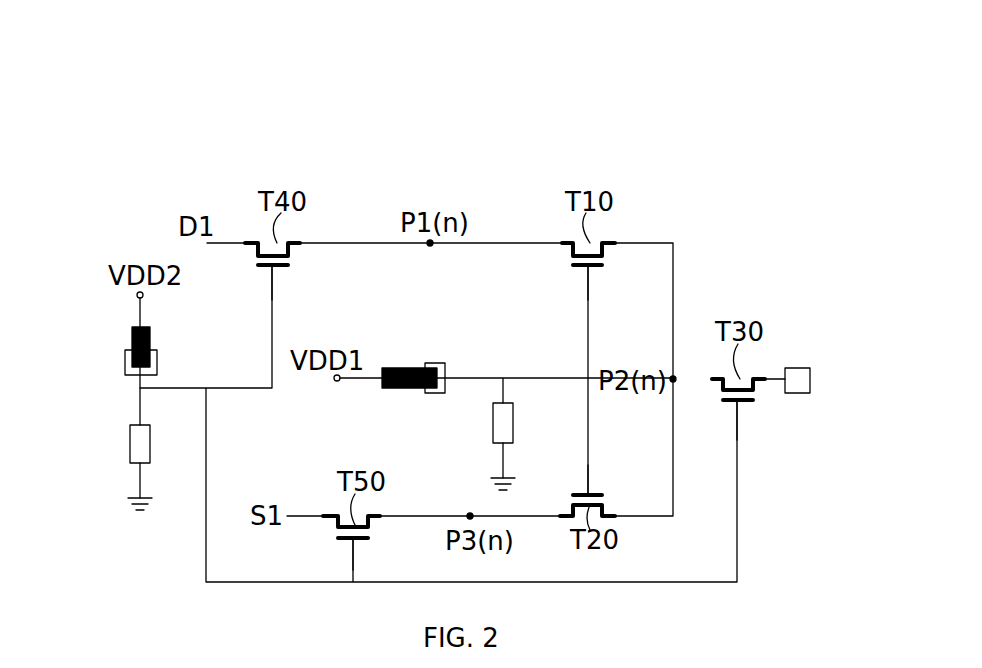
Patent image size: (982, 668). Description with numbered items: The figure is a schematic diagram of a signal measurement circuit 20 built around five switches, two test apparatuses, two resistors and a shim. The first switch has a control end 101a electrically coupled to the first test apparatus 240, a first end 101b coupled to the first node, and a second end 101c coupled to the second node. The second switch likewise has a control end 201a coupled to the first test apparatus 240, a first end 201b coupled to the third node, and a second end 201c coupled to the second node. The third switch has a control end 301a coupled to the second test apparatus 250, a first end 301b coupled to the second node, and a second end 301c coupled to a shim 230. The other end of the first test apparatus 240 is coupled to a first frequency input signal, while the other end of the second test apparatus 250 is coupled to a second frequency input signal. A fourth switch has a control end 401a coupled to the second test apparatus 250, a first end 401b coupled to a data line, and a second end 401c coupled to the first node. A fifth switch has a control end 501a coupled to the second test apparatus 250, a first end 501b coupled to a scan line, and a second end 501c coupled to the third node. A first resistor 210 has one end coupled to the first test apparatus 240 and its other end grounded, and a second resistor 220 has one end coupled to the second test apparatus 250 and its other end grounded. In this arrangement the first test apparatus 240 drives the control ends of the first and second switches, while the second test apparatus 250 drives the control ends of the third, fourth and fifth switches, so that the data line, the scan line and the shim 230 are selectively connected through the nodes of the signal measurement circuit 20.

The signal measurement circuit 20 is at (628, 95).
The second test apparatus 250 is at (126, 347).
The second resistor 220 is at (128, 450).
The first test apparatus 240 is at (408, 368).
The first resistor 210 is at (493, 426).
The shim 230 is at (811, 380).
The control end of the fourth switch 401a is at (288, 268).
The first end of the fourth switch 401b is at (238, 243).
The second end of the fourth switch 401c is at (312, 243).
The control end of the first switch 101a is at (584, 268).
The first end of the first switch 101b is at (555, 243).
The second end of the first switch 101c is at (623, 243).
The control end of the third switch 301a is at (740, 404).
The first end of the third switch 301b is at (706, 379).
The second end of the third switch 301c is at (772, 379).
The control end of the fifth switch 501a is at (350, 542).
The first end of the fifth switch 501b is at (316, 516).
The second end of the fifth switch 501c is at (390, 516).
The control end of the second switch 201a is at (590, 492).
The first end of the second switch 201b is at (552, 516).
The second end of the second switch 201c is at (626, 516).